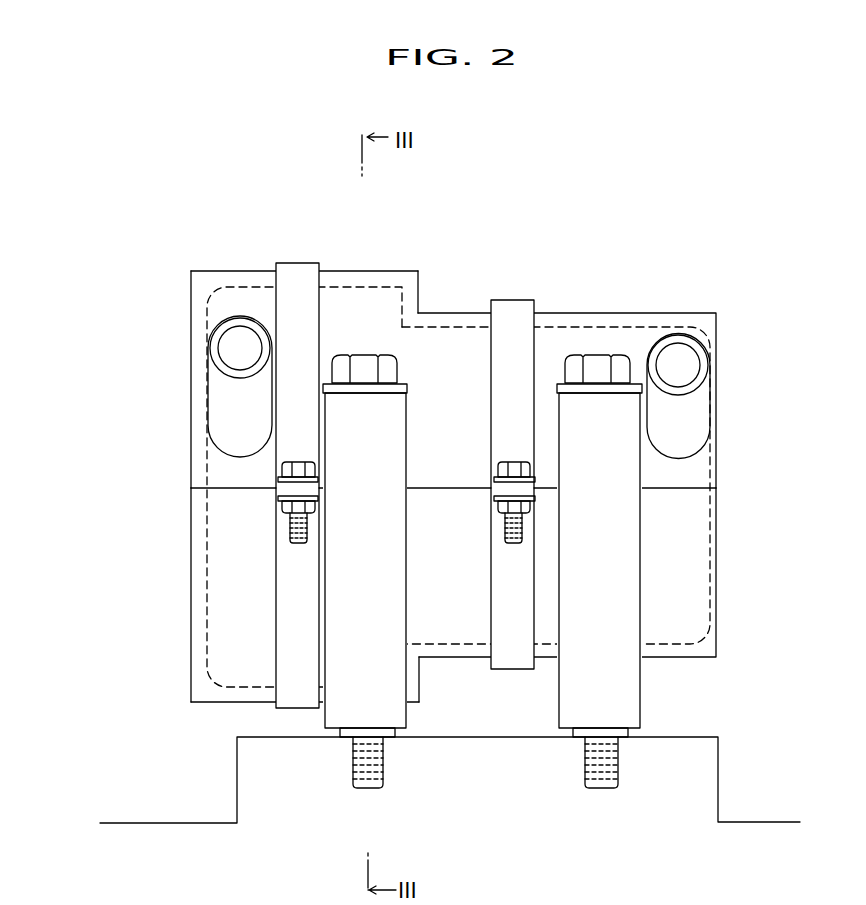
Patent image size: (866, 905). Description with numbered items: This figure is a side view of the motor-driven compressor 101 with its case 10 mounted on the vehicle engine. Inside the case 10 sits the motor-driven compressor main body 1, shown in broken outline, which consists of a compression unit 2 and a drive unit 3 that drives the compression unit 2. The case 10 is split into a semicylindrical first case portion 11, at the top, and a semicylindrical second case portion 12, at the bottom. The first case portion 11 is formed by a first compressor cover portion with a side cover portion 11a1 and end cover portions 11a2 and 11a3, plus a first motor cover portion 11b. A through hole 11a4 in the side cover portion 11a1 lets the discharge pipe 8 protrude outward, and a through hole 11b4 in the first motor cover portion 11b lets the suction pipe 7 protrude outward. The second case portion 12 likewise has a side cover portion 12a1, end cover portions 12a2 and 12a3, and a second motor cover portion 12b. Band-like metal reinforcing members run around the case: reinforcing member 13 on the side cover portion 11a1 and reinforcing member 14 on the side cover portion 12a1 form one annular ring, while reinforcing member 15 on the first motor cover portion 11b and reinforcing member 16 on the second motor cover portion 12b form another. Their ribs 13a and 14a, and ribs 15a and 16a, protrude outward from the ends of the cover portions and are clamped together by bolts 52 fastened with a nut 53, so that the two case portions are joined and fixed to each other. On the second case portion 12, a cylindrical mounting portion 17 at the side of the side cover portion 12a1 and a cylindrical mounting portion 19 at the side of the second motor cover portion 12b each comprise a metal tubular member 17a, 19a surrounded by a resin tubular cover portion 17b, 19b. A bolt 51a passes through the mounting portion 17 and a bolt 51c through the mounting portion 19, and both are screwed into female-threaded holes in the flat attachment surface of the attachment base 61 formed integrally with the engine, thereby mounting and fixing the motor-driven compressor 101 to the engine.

The motor-driven compressor 101 is at (152, 213).
The motor-driven compressor main body 1 is at (258, 283).
The compression unit 2 is at (203, 613).
The drive unit 3 is at (722, 597).
The suction pipe 7 is at (700, 390).
The discharge pipe 8 is at (220, 378).
The case 10 is at (433, 483).
The first case portion 11 is at (184, 261).
The side cover portion 11a1 is at (223, 270).
The end cover portion 11a2 is at (190, 321).
The end cover portion 11a3 is at (420, 290).
The through hole 11a4 is at (212, 412).
The first motor cover portion 11b is at (675, 313).
The through hole 11b4 is at (710, 410).
The second case portion 12 is at (177, 711).
The side cover portion 12a1 is at (223, 703).
The end cover portion 12a2 is at (190, 658).
The end cover portion 12a3 is at (420, 682).
The second motor cover portion 12b is at (695, 658).
The reinforcing member 13 is at (288, 263).
The rib 13a is at (280, 482).
The reinforcing member 14 is at (290, 710).
The rib 14a is at (282, 498).
The reinforcing member 15 is at (515, 300).
The rib 15a is at (535, 482).
The reinforcing member 16 is at (525, 672).
The rib 16a is at (535, 506).
The mounting portion 17 is at (410, 723).
The tubular member 17a is at (413, 743).
The tubular cover portion 17b is at (410, 715).
The mounting portion 19 is at (643, 722).
The tubular member 19a is at (645, 738).
The tubular cover portion 19b is at (642, 703).
The bolt 51a is at (355, 355).
The bolt 51c is at (600, 355).
The bolt 52 is at (282, 468).
The nut 53 is at (282, 512).
The attachment base 61 is at (718, 773).